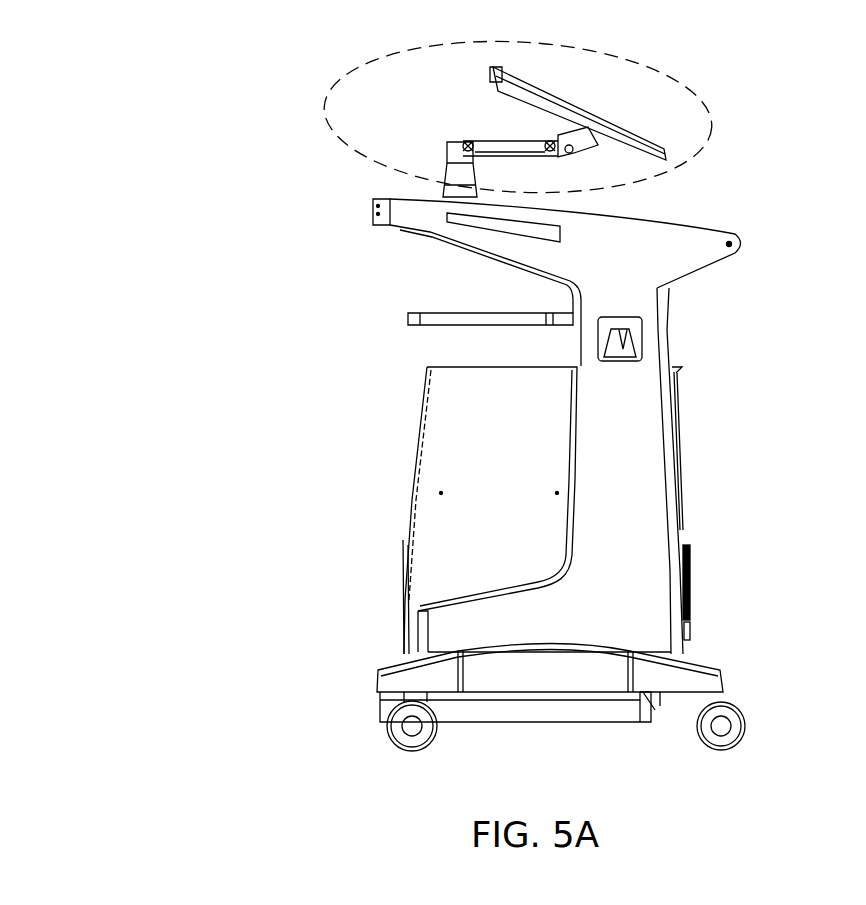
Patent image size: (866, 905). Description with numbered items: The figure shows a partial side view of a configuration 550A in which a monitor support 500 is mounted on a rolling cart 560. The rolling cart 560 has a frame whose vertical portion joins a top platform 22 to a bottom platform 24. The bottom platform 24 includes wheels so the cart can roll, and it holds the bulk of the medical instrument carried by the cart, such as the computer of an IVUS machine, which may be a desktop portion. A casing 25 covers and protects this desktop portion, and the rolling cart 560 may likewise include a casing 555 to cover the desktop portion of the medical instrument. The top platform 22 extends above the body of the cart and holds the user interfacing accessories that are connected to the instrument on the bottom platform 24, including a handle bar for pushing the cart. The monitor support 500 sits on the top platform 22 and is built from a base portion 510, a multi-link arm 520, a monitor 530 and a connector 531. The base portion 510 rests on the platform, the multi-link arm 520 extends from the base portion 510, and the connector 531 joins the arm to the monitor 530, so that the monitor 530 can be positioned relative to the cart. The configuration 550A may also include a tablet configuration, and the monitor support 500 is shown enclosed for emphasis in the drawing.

The configuration 550A is at (204, 200).
The monitor support 500 is at (347, 87).
The base portion 510 is at (446, 157).
The multi-link arm 520 is at (518, 138).
The monitor 530 is at (563, 96).
The connector 531 is at (560, 160).
The top platform 22 is at (637, 258).
The casing 25 is at (515, 468).
The bottom platform 24 is at (568, 688).
The rolling cart 560 is at (670, 487).
The casing 555 is at (683, 607).